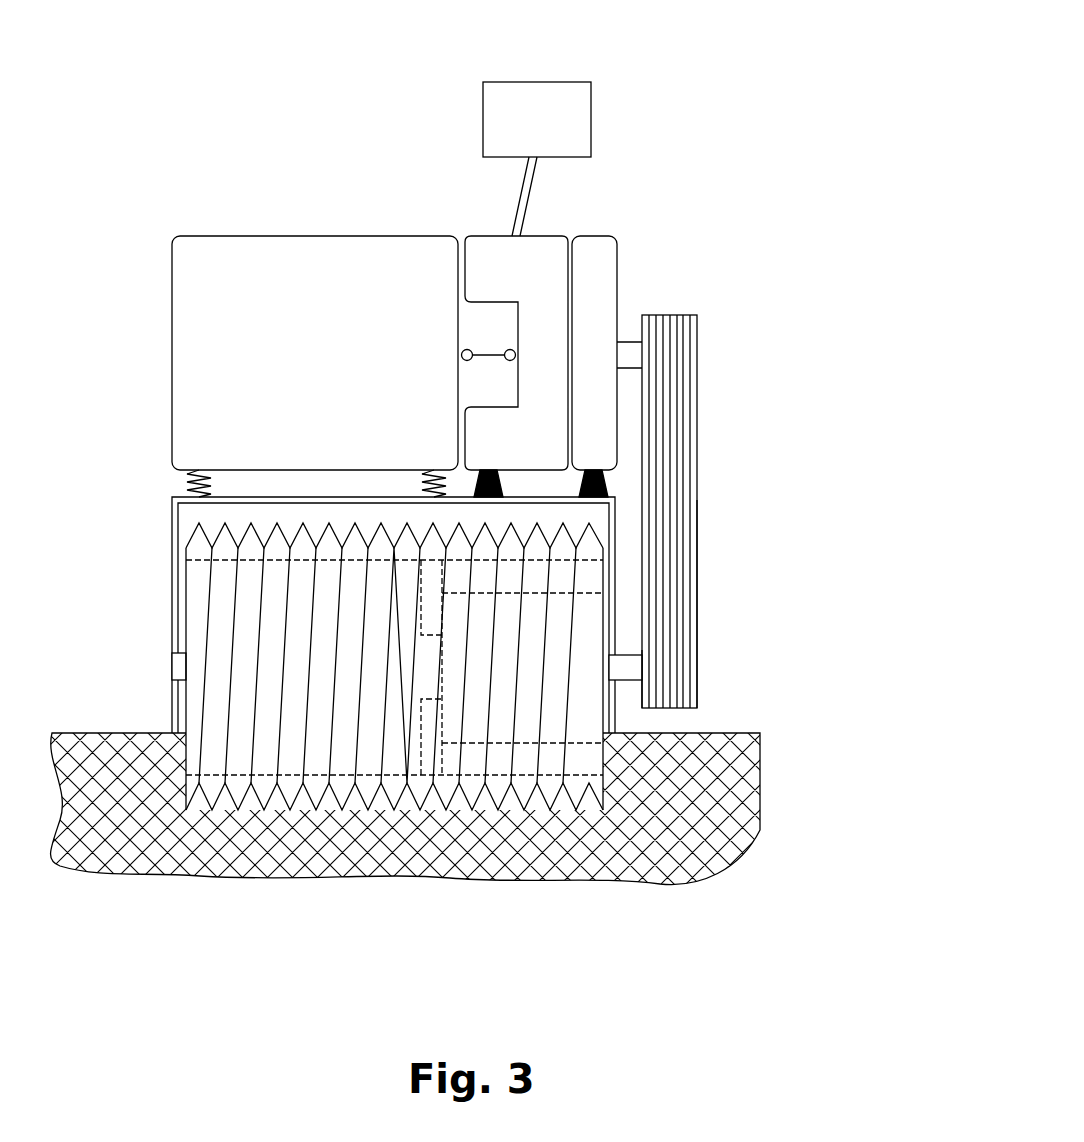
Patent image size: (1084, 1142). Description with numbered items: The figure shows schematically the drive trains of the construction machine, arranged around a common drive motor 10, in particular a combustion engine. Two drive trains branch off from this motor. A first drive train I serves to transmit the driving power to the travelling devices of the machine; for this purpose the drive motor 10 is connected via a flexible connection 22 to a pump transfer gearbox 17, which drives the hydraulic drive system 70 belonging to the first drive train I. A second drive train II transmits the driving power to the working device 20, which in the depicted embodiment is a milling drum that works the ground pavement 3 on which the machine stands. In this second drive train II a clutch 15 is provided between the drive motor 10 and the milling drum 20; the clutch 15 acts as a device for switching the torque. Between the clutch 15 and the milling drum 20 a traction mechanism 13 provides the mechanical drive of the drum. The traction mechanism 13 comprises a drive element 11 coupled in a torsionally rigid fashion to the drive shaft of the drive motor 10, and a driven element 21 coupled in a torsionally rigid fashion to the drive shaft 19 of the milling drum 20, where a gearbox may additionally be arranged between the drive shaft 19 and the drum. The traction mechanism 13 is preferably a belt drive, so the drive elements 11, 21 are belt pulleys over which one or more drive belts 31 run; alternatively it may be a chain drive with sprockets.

The ground pavement 3 is at (734, 733).
The drive motor 10 is at (317, 367).
The drive element 11 is at (726, 511).
The traction mechanism 13 is at (705, 540).
The clutch 15 is at (605, 353).
The pump transfer gearbox 17 is at (557, 353).
The drive shaft 19 is at (625, 667).
The working device 20 is at (196, 580).
The drive element 21 is at (710, 648).
The flexible connection 22 is at (490, 357).
The drive belts 31 is at (677, 443).
The hydraulic drive system 70 is at (540, 95).
The first drive train I is at (843, 185).
The second drive train II is at (843, 362).